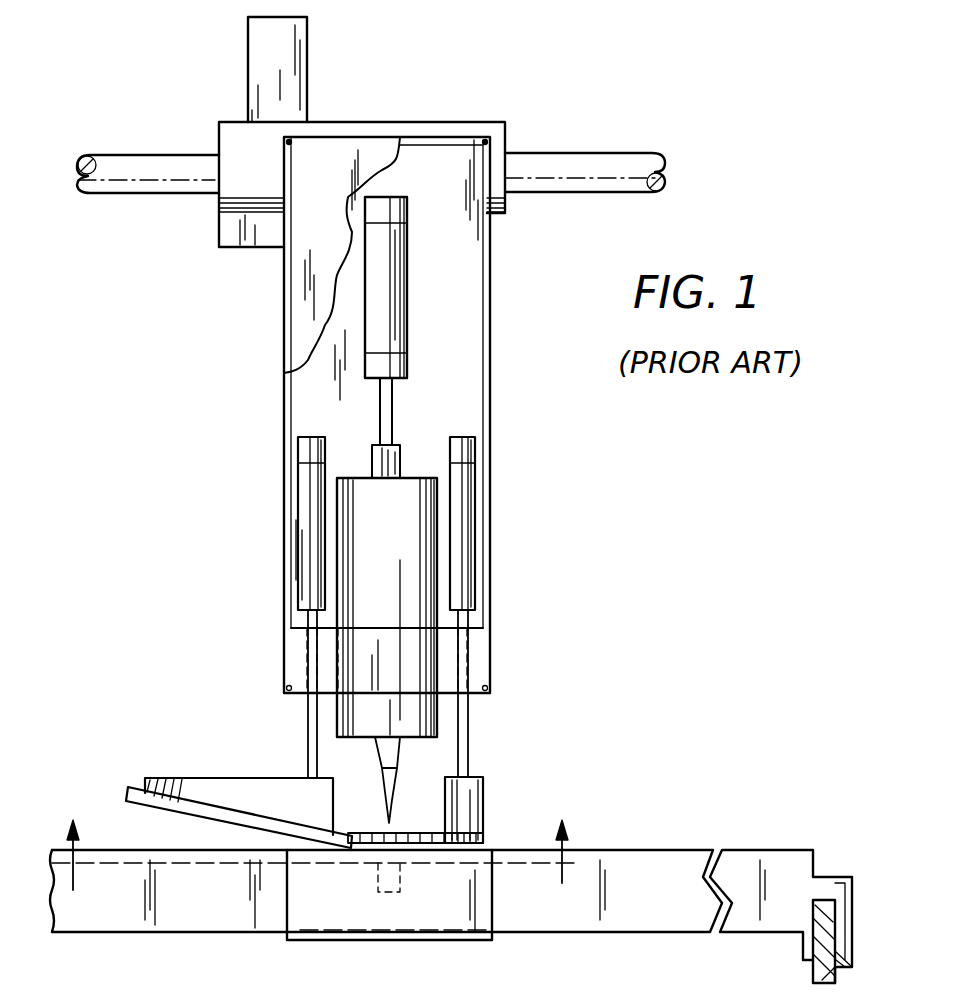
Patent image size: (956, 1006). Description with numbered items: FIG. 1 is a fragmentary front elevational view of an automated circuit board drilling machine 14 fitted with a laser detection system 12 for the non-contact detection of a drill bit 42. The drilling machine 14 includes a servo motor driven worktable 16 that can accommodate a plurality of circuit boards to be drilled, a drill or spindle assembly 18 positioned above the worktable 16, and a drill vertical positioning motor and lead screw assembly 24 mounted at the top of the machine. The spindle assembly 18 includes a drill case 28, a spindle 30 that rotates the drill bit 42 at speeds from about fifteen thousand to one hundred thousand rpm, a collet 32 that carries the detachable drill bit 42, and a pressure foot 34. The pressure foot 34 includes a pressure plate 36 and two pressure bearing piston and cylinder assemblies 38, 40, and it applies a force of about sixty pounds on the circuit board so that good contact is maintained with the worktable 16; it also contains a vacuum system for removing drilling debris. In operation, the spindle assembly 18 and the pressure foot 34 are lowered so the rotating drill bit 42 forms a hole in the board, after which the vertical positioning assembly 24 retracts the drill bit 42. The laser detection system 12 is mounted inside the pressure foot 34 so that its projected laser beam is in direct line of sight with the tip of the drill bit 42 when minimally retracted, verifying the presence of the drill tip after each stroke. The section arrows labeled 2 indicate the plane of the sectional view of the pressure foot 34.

The section line 2- 2 is at (318, 839).
The laser detection system 12 is at (125, 795).
The automated circuit board drilling machine 14 is at (528, 97).
The worktable 16 is at (648, 860).
The spindle assembly 18 is at (492, 383).
The drill vertical positioning motor and lead screw assembly 24 is at (384, 302).
The drill case 28 is at (490, 275).
The spindle 30 is at (416, 514).
The collet 32 is at (385, 752).
The pressure foot 34 is at (188, 763).
The pressure plate 36 is at (427, 832).
The pressure bearing piston and cylinder assembly 38 is at (310, 593).
The pressure bearing piston and cylinder assembly 40 is at (463, 590).
The drill bit 42 is at (388, 825).